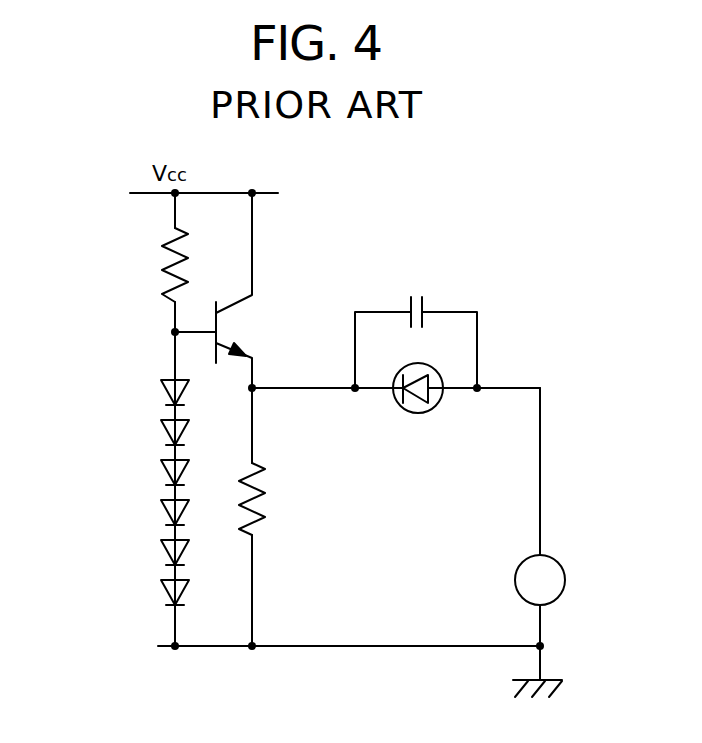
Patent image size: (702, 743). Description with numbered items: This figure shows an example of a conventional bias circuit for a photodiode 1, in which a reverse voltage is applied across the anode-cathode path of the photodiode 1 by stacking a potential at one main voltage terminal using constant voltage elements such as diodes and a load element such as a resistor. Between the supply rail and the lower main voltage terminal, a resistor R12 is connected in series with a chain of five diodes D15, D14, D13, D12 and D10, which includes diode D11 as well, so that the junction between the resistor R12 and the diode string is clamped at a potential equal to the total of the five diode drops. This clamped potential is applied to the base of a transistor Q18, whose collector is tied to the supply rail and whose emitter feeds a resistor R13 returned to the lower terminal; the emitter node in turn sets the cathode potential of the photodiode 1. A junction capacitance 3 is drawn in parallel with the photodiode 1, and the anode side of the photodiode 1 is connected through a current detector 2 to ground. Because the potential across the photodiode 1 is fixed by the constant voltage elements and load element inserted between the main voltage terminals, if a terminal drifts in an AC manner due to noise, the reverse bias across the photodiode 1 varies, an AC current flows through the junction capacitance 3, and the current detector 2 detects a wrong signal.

The resistor R12 is at (147, 265).
The transistor Q18 is at (236, 290).
The resistor R13 is at (279, 499).
The diode D15 is at (143, 392).
The diode D14 is at (143, 432).
The diode D13 is at (143, 472).
The diode D12 is at (143, 512).
The diode D11 is at (143, 552).
The diode D10 is at (143, 592).
The junction capacitance 3 is at (424, 309).
The photodiode 1 is at (414, 414).
The current detector 2 is at (515, 578).